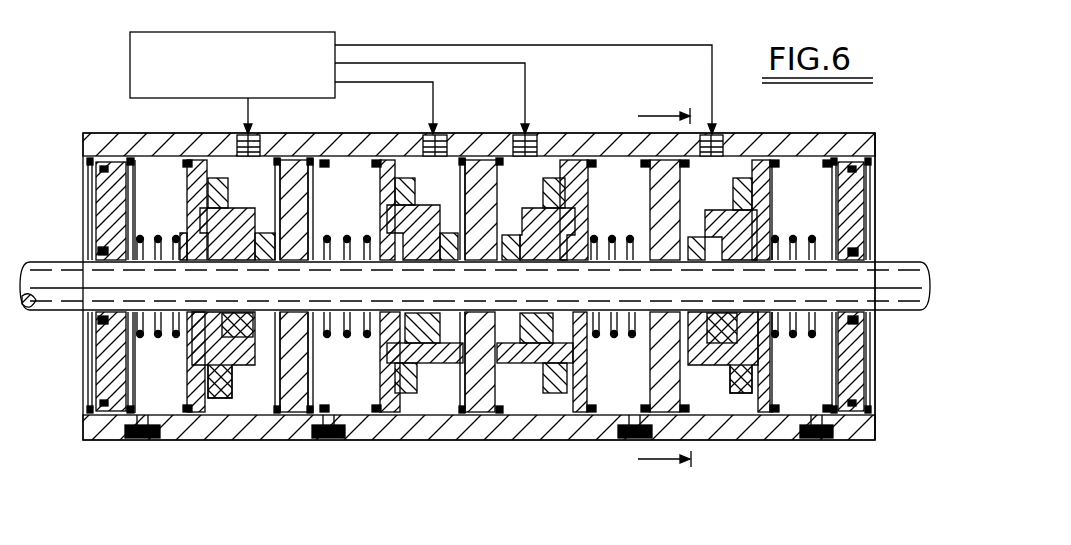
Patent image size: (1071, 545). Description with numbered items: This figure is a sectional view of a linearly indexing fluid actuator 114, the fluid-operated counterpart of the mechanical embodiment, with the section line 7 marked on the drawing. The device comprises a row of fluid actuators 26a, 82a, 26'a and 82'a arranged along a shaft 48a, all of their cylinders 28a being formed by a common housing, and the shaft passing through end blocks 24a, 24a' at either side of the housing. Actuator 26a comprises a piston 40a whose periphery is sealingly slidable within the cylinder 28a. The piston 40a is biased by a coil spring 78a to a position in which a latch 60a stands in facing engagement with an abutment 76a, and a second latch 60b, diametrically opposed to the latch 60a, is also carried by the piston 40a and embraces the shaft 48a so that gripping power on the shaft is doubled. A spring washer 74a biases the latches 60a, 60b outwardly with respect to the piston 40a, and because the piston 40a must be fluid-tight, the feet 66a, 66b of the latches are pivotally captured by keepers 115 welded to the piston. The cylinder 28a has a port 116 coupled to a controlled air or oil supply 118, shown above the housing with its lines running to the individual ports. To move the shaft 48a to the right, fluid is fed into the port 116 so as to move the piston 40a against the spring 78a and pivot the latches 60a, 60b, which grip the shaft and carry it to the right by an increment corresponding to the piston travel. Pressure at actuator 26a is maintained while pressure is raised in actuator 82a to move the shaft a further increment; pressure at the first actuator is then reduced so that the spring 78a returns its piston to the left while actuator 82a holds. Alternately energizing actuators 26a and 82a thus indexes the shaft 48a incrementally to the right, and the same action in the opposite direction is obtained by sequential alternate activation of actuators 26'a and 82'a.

The linearly indexing fluid actuator 114 is at (737, 52).
The controlled air supply 118 is at (335, 32).
The keeper 115 is at (457, 134).
The port 116 is at (719, 133).
The fluid actuator 26a is at (805, 133).
The cylinder 28a is at (863, 132).
The fluid actuator 26'a is at (479, 443).
The shaft 48a is at (49, 263).
The end seal block 24a is at (876, 285).
The end seal block 24a' is at (83, 285).
The fluid actuator 82'a is at (151, 255).
The fluid actuator 82a is at (594, 176).
The second latch 60b is at (240, 218).
The latch 60a is at (250, 422).
The abutment 76a is at (306, 218).
The coil spring 78a is at (163, 236).
The piston 40a is at (763, 212).
The spring washer 74a is at (212, 422).
The foot 66a is at (553, 382).
The foot 66b is at (665, 210).
The section line 7 is at (664, 286).